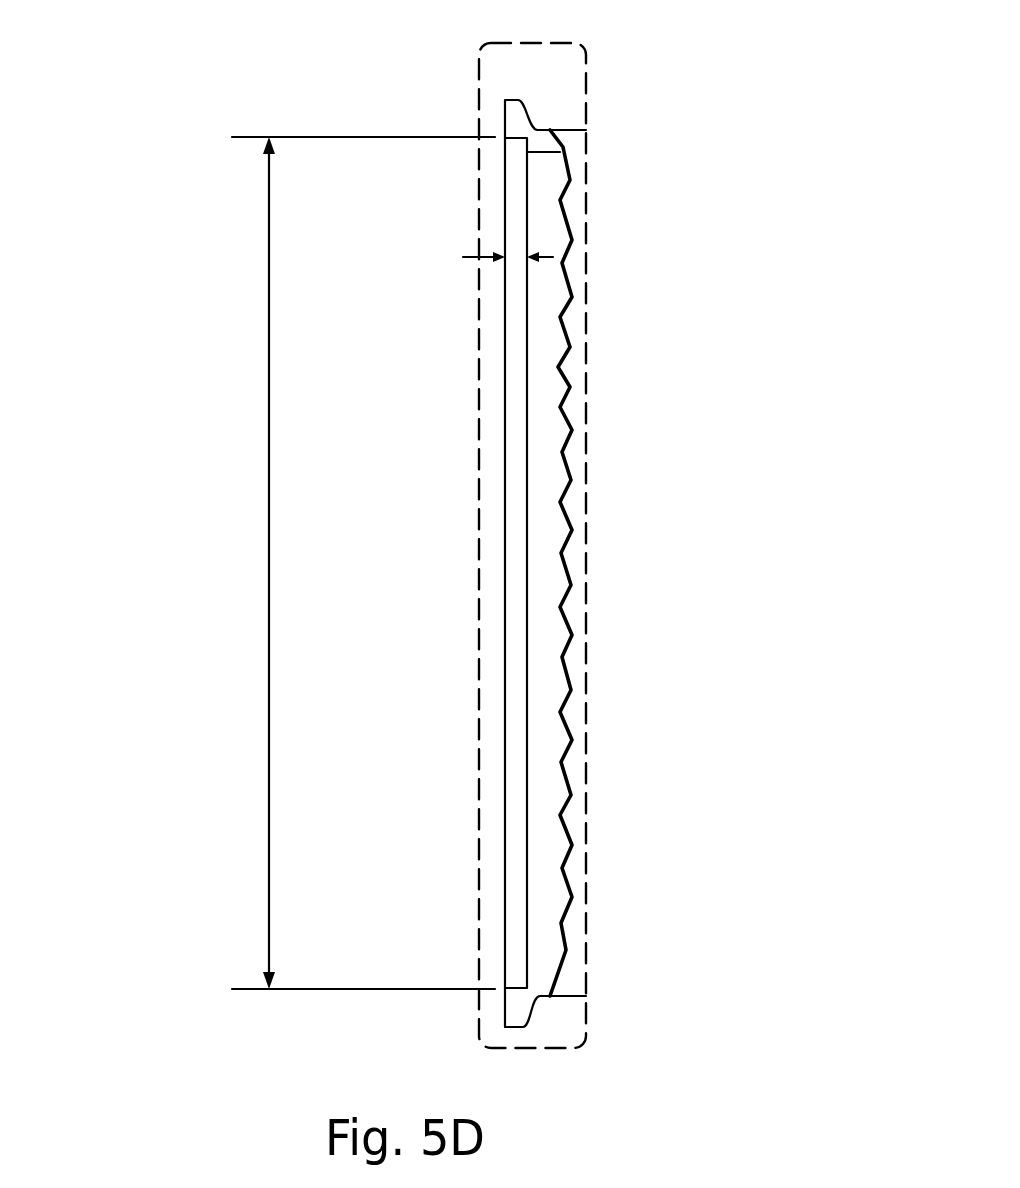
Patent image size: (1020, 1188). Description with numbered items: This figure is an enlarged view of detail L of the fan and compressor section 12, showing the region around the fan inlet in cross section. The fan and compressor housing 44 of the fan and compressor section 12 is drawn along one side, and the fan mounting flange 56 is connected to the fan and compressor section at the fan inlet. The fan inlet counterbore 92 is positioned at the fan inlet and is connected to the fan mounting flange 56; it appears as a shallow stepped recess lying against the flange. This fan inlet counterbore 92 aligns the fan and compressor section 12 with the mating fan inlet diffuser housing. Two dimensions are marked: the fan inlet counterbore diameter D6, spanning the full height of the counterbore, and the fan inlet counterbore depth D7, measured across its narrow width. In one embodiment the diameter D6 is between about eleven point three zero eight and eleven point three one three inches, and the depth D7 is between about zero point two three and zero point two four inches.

The fan and compressor section 12 is at (135, 112).
The fan and compressor housing 44 is at (560, 130).
The fan mounting flange 56 is at (507, 116).
The fan inlet counterbore 92 is at (490, 680).
The detail L is at (587, 220).
The fan inlet counterbore diameter D6 is at (268, 423).
The fan inlet counterbore depth D7 is at (463, 257).